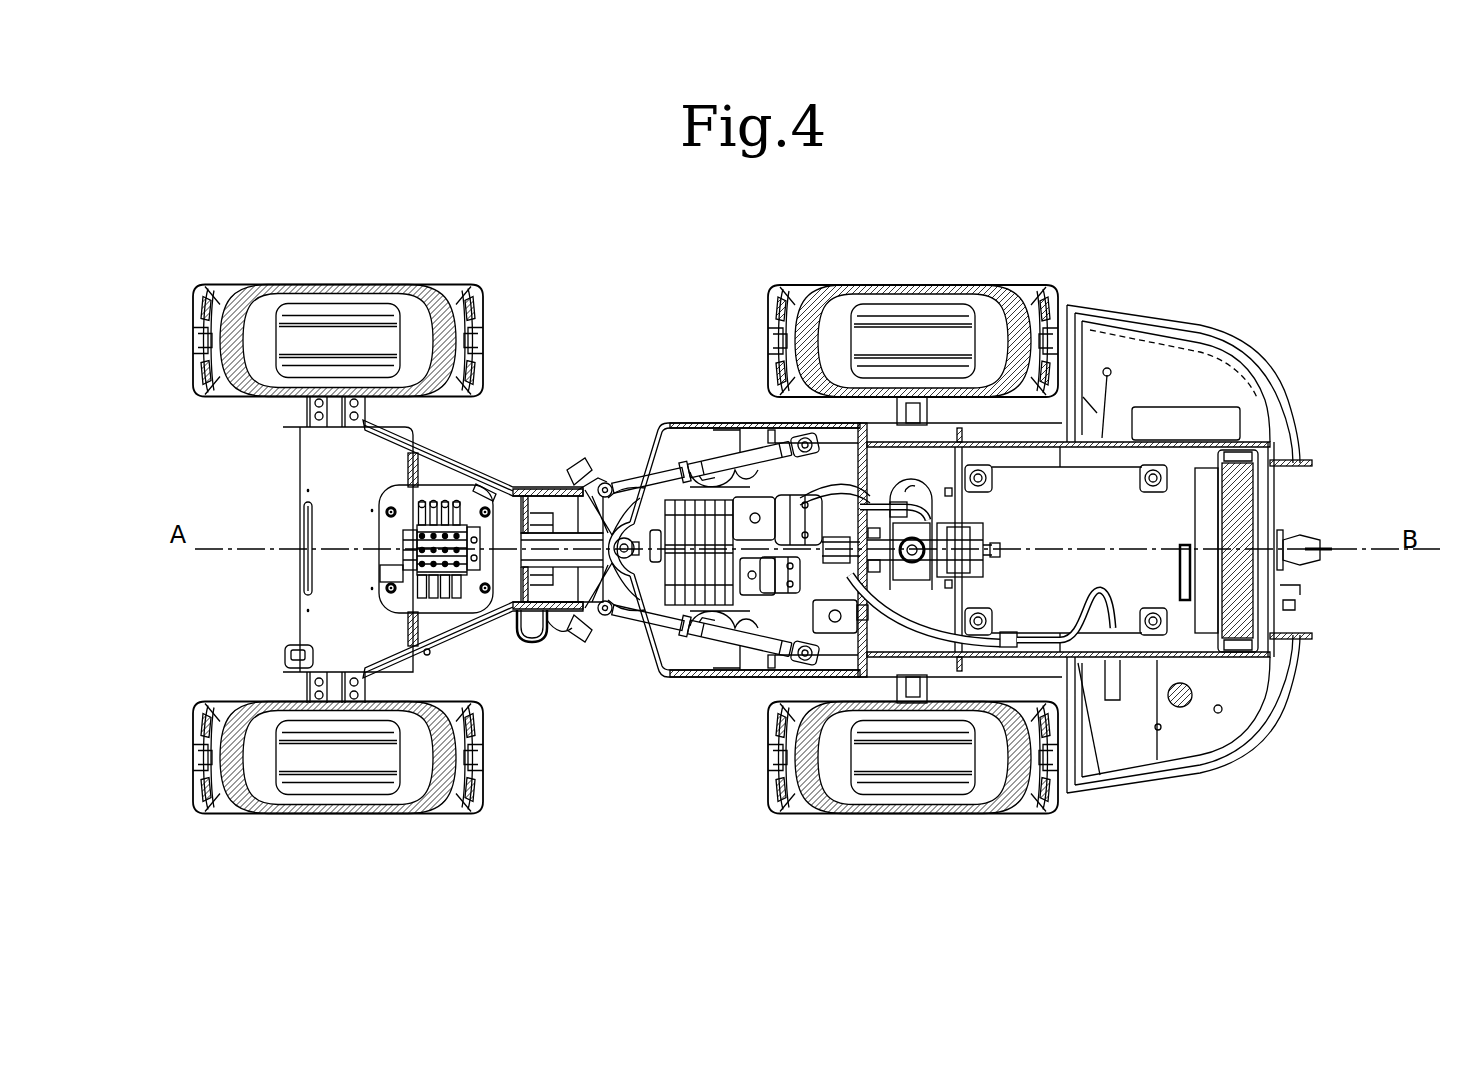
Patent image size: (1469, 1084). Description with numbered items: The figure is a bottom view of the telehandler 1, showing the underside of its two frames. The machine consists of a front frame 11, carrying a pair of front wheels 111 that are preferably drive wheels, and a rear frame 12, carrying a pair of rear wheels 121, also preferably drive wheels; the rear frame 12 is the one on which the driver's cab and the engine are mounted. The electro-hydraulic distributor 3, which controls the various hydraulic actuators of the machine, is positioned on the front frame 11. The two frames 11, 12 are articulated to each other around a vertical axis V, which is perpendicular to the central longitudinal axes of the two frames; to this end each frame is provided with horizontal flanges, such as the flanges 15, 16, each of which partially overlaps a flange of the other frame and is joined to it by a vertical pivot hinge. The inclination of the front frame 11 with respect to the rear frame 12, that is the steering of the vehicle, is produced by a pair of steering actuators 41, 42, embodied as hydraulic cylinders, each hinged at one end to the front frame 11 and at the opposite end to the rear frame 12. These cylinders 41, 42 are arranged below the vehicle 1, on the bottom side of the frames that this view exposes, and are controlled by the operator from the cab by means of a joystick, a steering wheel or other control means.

The telehandler 1 is at (1283, 190).
The electro-hydraulic distributor 3 is at (462, 505).
The front frame 11 is at (488, 656).
The rear frame 12 is at (695, 707).
The horizontal flange 15 is at (613, 483).
The horizontal flange 16 is at (640, 572).
The steering actuator 41 is at (705, 452).
The steering actuator 42 is at (757, 641).
The front wheels 111 is at (250, 347).
The rear wheels 121 is at (893, 312).
The vertical axis V is at (651, 438).